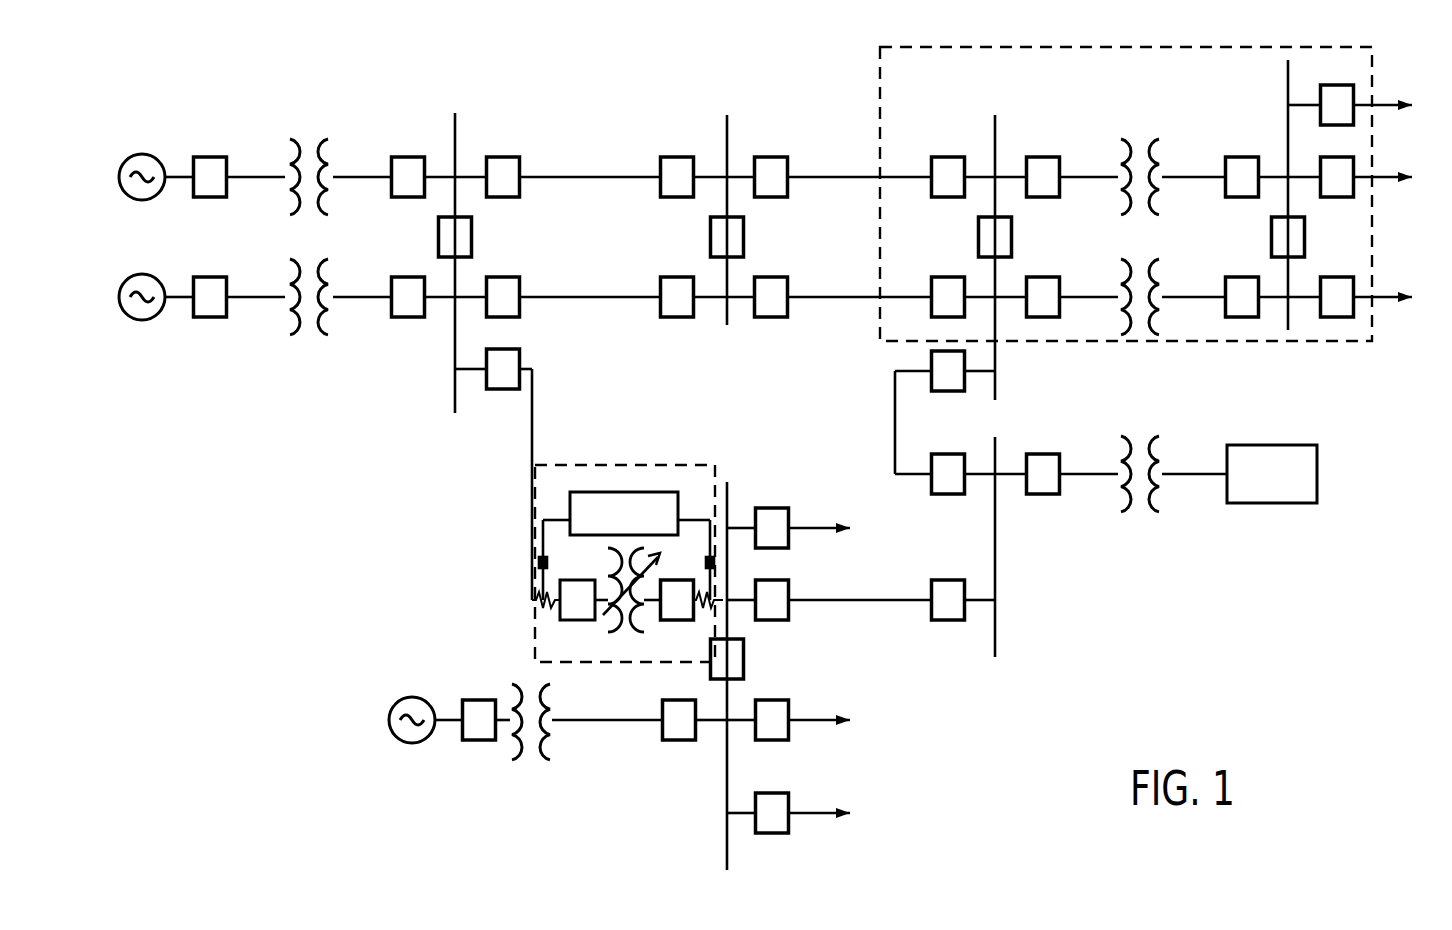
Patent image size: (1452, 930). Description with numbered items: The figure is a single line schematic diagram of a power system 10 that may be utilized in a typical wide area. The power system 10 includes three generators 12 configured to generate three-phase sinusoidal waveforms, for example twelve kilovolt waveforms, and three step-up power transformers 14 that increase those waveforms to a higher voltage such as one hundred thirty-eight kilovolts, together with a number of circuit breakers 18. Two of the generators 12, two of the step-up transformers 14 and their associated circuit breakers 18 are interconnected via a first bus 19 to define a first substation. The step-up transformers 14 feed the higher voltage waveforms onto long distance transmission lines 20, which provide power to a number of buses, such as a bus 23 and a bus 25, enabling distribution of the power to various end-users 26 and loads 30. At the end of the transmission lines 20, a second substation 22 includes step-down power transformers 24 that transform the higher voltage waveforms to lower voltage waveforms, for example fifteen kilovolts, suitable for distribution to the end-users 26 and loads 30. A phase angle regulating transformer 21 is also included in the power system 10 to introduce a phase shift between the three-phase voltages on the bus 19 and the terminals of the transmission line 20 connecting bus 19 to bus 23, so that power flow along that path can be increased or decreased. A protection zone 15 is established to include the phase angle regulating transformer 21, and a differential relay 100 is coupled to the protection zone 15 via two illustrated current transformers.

The power system 10 is at (797, 60).
The generators 12 is at (143, 200).
The step-up power transformers 14 is at (307, 130).
The protection zone 15 is at (627, 551).
The circuit breakers 18 is at (503, 197).
The first bus 19 is at (455, 132).
The transmission lines 20 is at (620, 177).
The phase angle regulating (PAR) transformer 21 is at (625, 632).
The second substation 22 is at (1187, 46).
The bus 23 is at (735, 492).
The step-down power transformers 24 is at (1142, 130).
The bus 25 is at (729, 141).
The end-users 26 is at (1388, 110).
The loads 30 is at (1318, 473).
The differential relay 100 is at (624, 513).